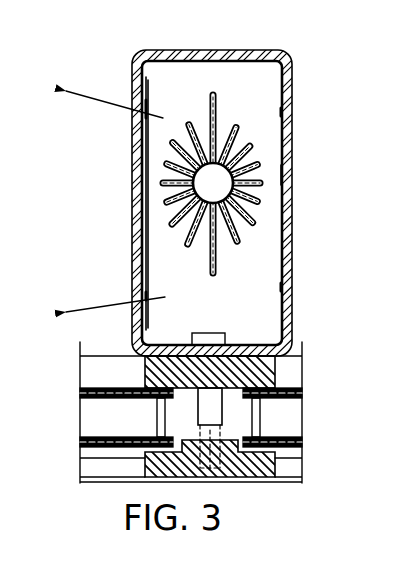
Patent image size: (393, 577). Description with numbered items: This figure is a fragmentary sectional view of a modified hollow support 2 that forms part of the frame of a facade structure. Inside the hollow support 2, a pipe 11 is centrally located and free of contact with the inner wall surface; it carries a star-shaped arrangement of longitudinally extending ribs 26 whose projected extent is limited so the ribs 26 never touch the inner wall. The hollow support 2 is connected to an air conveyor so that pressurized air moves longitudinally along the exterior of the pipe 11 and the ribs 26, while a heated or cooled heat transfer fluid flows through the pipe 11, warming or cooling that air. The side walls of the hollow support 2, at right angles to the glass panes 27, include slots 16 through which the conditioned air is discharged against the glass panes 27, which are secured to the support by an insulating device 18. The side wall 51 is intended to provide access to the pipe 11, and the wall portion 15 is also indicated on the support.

The hollow support 2 is at (292, 74).
The side wall 51 is at (134, 228).
The slots 16 is at (137, 110).
The housing wall 15 is at (283, 176).
The pipe 11 is at (217, 143).
The longitudinally extending ribs 26 is at (243, 180).
The device 18 is at (278, 372).
The glass panes 27 is at (302, 395).